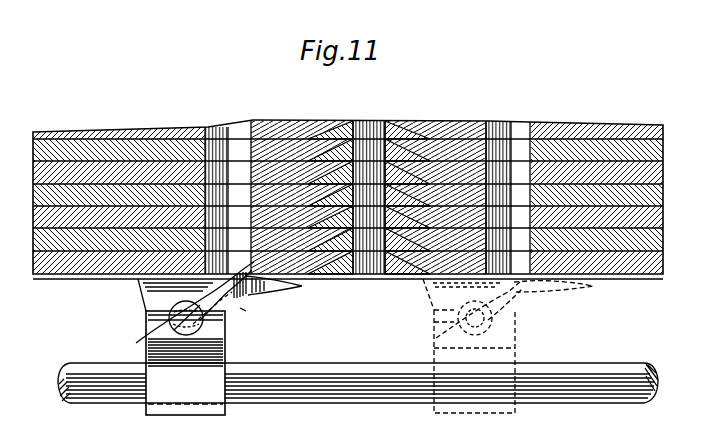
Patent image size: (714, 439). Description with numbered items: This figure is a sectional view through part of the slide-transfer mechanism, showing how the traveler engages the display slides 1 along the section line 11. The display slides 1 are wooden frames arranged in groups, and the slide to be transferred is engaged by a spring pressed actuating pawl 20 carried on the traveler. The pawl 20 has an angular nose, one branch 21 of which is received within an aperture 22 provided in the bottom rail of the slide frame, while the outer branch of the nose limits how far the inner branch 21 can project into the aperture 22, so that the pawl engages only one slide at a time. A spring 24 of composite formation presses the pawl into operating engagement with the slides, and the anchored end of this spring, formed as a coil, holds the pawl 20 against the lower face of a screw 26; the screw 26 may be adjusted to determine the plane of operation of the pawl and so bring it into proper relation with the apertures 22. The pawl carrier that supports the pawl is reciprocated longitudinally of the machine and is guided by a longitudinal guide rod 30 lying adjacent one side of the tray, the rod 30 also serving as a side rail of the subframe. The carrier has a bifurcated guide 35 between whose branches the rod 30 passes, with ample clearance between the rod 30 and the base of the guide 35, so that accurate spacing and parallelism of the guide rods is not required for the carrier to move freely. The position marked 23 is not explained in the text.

The display slide 1 is at (398, 112).
The interlocking tooth section 11 is at (356, 242).
The actuating pawl 20 is at (241, 282).
The inner branch of pawl nose 21 is at (209, 258).
The aperture 22 is at (197, 275).
The hook tab 23 is at (281, 279).
The spring 24 is at (238, 303).
The screw 26 is at (160, 318).
The longitudinal guide rod 30 is at (611, 357).
The bifurcated guide 35 is at (166, 408).